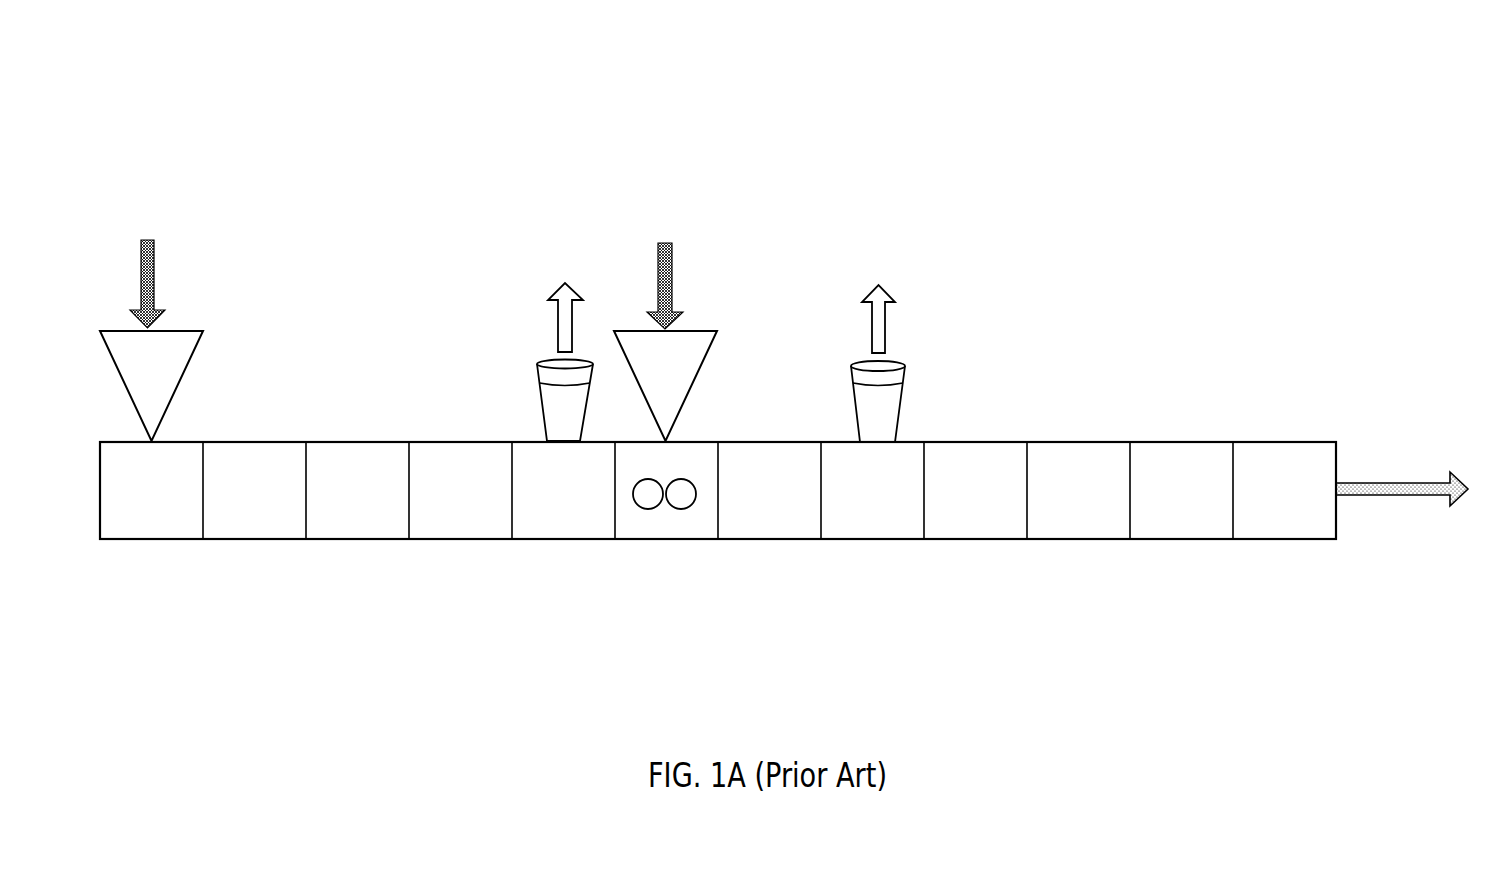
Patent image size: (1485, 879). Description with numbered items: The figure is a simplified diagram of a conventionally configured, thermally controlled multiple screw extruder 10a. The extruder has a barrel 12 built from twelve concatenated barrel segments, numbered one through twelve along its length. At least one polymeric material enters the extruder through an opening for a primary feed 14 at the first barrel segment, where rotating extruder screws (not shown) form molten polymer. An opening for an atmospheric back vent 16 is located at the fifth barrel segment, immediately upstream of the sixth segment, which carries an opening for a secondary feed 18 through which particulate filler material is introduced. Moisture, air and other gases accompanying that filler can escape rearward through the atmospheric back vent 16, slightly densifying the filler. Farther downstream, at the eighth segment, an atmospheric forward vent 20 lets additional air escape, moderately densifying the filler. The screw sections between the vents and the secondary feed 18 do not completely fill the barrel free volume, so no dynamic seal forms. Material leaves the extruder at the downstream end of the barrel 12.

The thermally controlled multiple screw extruder 10a is at (1196, 110).
The barrel 12 is at (290, 430).
The primary feed 14 is at (173, 365).
The atmospheric back vent 16 is at (551, 413).
The secondary feed 18 is at (683, 373).
The atmospheric forward vent 20 is at (887, 410).